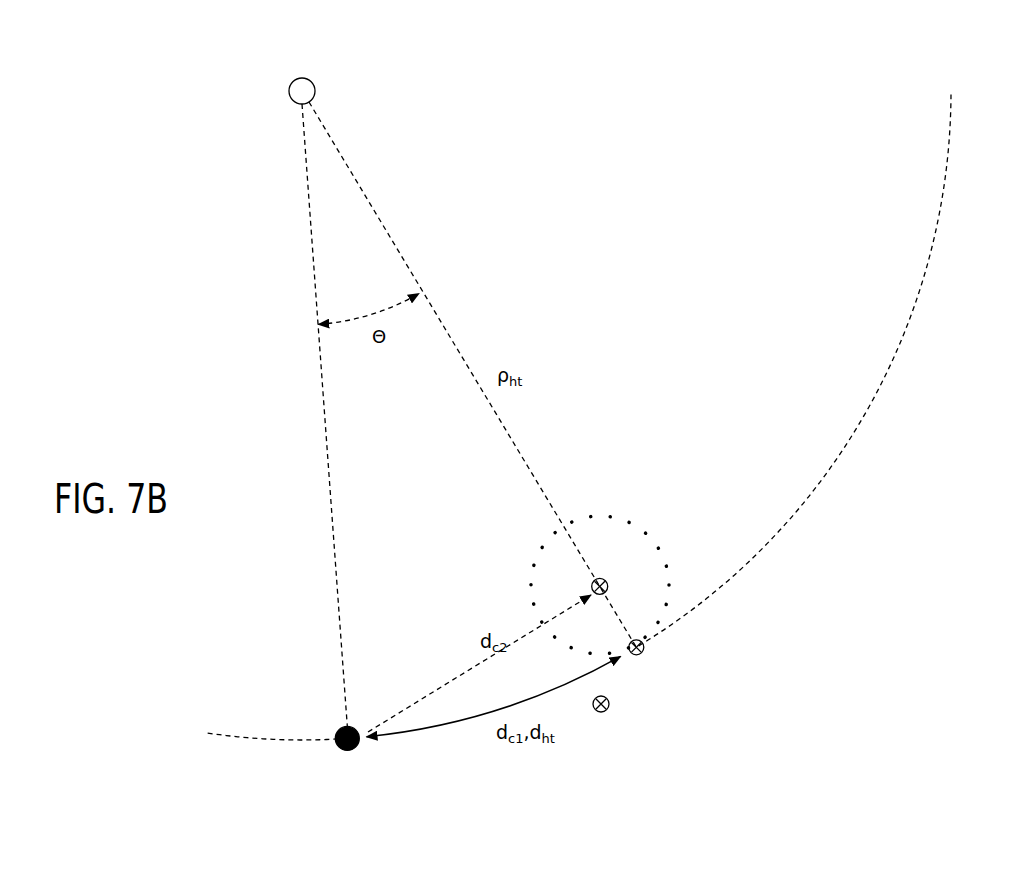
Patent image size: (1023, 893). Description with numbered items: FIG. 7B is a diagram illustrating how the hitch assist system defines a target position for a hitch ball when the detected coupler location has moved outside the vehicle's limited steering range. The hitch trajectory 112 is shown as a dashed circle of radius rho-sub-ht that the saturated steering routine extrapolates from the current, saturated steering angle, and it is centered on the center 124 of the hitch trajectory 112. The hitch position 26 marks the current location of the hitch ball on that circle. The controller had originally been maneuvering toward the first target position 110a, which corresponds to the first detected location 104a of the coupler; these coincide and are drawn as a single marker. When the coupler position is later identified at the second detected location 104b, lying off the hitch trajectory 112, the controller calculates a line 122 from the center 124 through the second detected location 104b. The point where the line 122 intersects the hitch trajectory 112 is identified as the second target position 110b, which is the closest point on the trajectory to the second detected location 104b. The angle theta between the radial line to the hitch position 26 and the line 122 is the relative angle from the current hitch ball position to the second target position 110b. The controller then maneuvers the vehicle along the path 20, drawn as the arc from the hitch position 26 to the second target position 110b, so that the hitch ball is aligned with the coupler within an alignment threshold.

The center of the hitch trajectory 124 is at (315, 93).
The line 122 is at (433, 310).
The hitch trajectory 112 is at (872, 392).
The second detected location 104b is at (601, 578).
The second target position 110b is at (643, 652).
The first detected location 104a is at (676, 727).
The first target position 110a is at (603, 712).
The hitch position 26 is at (338, 730).
The vehicle path 20 is at (437, 742).